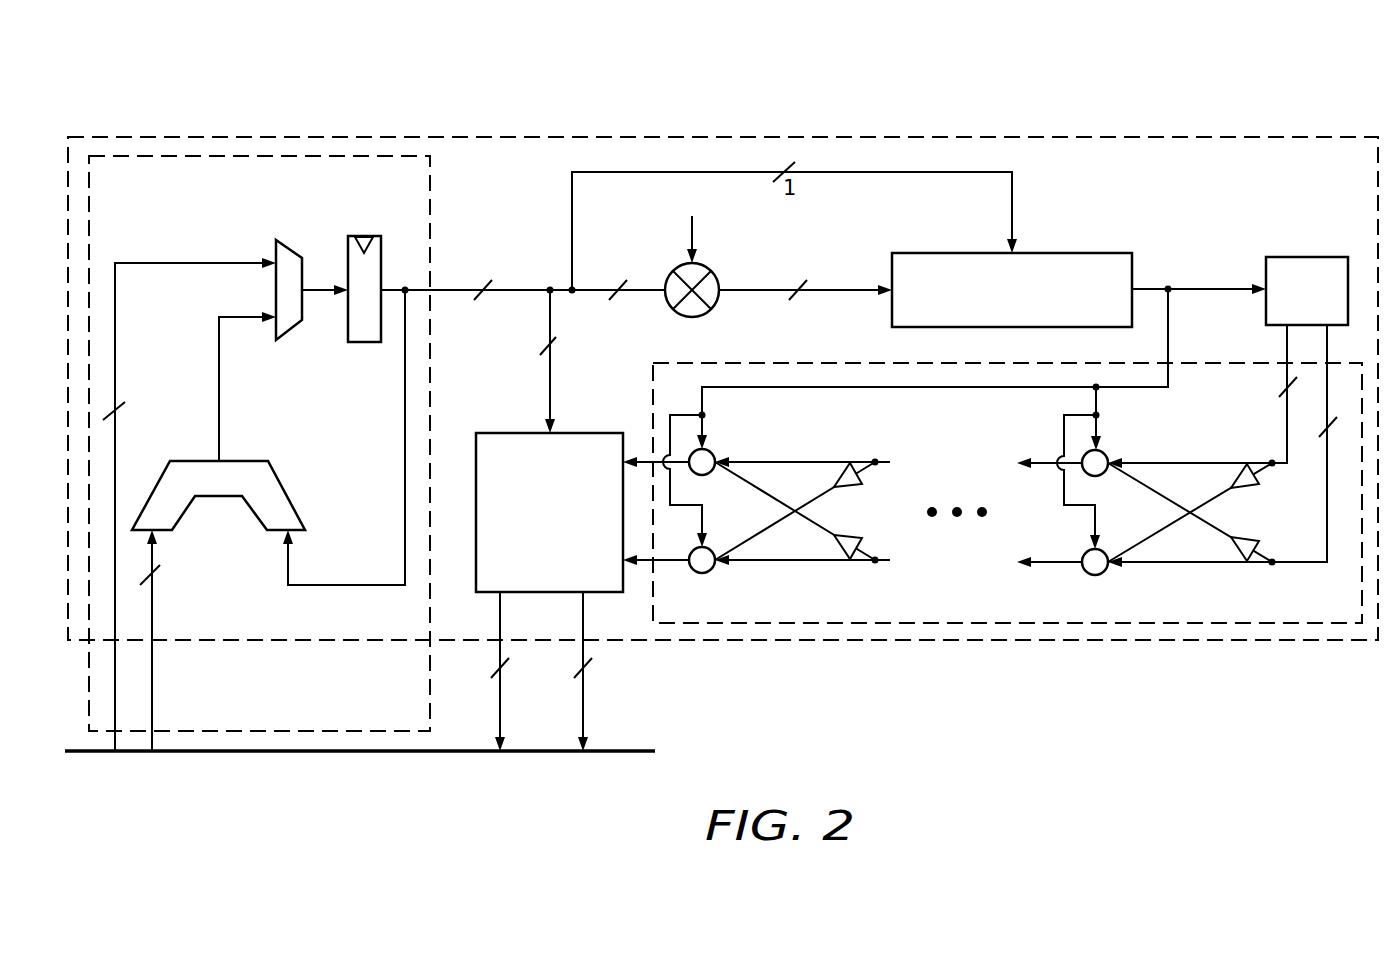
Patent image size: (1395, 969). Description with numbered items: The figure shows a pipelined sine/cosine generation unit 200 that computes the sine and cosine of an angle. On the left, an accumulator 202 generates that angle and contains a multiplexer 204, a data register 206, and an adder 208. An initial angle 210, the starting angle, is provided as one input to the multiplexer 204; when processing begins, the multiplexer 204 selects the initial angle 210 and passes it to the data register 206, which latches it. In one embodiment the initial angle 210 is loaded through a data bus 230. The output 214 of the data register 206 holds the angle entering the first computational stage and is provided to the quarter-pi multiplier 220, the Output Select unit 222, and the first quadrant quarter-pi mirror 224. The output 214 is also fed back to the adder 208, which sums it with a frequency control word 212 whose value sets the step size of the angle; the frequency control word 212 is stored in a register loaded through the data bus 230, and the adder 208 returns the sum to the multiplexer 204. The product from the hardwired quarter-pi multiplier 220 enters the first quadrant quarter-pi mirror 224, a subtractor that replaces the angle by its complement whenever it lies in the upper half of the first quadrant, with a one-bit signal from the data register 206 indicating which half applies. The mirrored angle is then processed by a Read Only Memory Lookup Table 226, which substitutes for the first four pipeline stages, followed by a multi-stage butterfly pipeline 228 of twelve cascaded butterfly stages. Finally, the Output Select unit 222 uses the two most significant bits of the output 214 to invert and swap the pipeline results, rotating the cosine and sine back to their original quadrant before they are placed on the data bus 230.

The pipelined sine/cosine generation unit 200 is at (985, 76).
The accumulator 202 is at (212, 156).
The multiplexer 204 is at (291, 262).
The data register 206 is at (365, 332).
The adder 208 is at (240, 476).
The initial angle 210 is at (172, 195).
The frequency control word 212 is at (292, 686).
The output of the data register 214 is at (378, 585).
The π/4 multiplier 220 is at (677, 268).
The Output Select unit 222 is at (530, 432).
The first quadrant π/4 mirror 224 is at (962, 253).
The Read Only Memory Lookup Table 226 is at (1320, 257).
The multi-stage butterfly pipeline 228 is at (1222, 624).
The data bus 230 is at (750, 727).